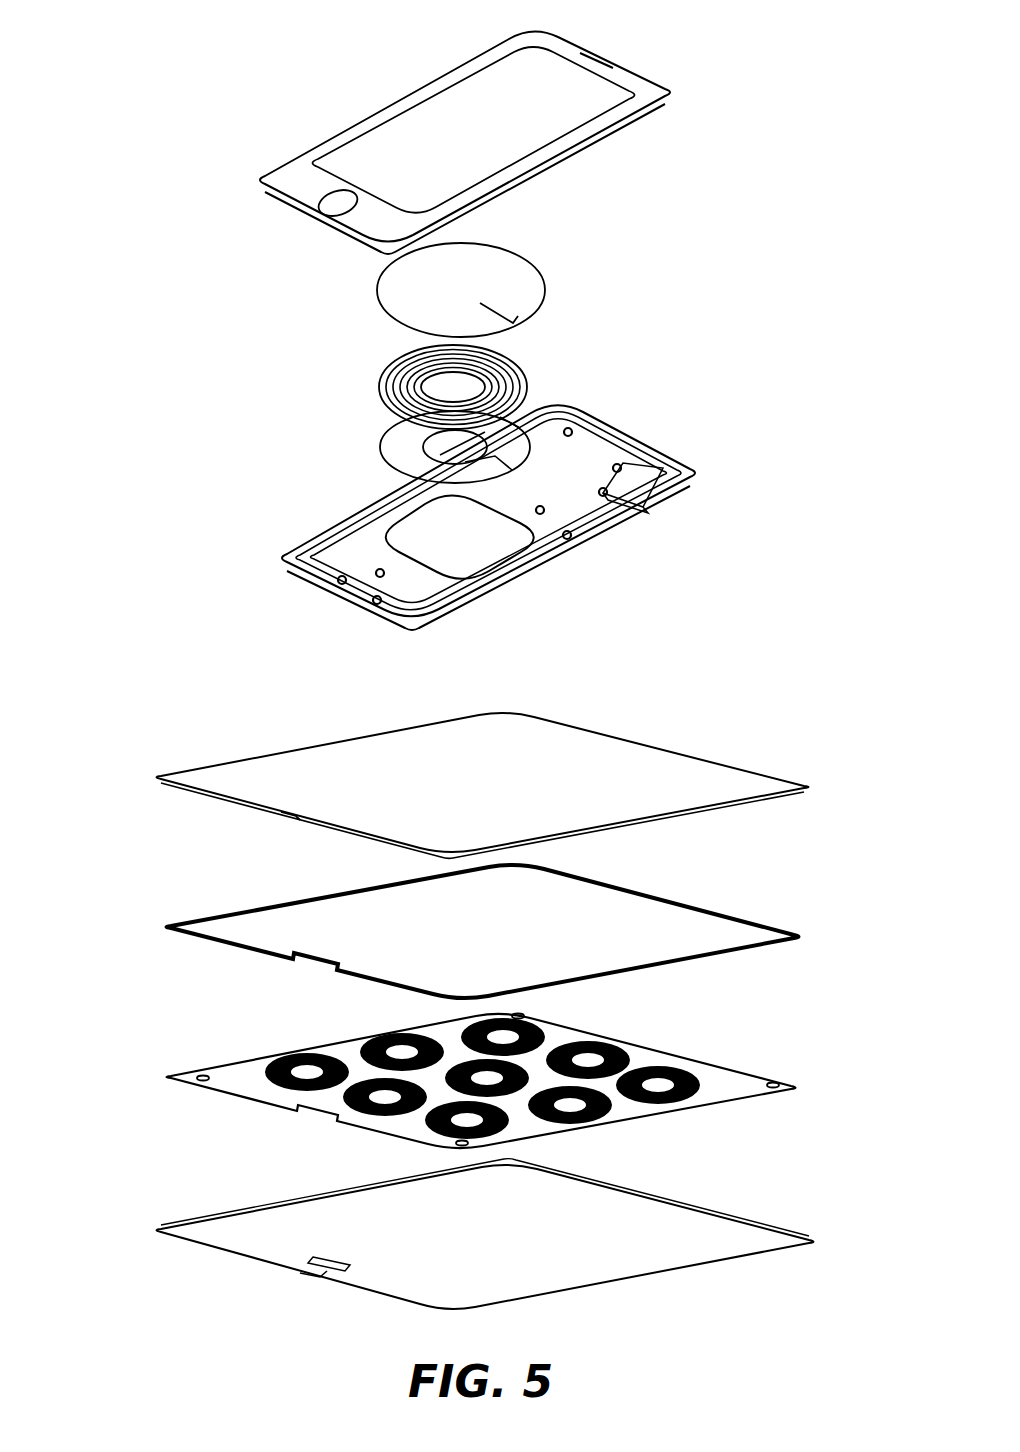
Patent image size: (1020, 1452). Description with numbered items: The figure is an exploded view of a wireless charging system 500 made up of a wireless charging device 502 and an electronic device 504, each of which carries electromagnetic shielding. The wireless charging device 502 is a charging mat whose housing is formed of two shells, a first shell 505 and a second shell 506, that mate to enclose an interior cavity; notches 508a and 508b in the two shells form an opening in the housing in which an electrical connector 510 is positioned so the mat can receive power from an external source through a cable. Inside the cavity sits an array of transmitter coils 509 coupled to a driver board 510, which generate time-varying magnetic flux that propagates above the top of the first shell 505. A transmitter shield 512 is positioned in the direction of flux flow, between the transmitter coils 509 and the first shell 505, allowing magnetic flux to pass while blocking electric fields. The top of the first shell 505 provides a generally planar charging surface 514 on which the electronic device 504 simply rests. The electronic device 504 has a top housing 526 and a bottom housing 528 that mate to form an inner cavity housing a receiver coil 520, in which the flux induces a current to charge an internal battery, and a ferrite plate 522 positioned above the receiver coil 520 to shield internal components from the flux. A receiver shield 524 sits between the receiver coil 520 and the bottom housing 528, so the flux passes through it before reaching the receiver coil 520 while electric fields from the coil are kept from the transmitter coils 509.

The wireless charging system 500 is at (777, 69).
The wireless charging device 502 is at (120, 705).
The electronic device 504 is at (120, 30).
The first shell 505 is at (752, 770).
The second shell 506 is at (757, 1223).
The notch 508a is at (287, 817).
The notch 508b is at (307, 1273).
The transmitter coils 509 is at (606, 1044).
The driver board 510 is at (756, 1071).
The transmitter shield 512 is at (762, 922).
The charging surface 514 is at (336, 763).
The receiver coil 520 is at (380, 392).
The ferrite plate 522 is at (378, 302).
The receiver shield 524 is at (386, 440).
The top housing 526 is at (594, 158).
The bottom housing 528 is at (638, 437).